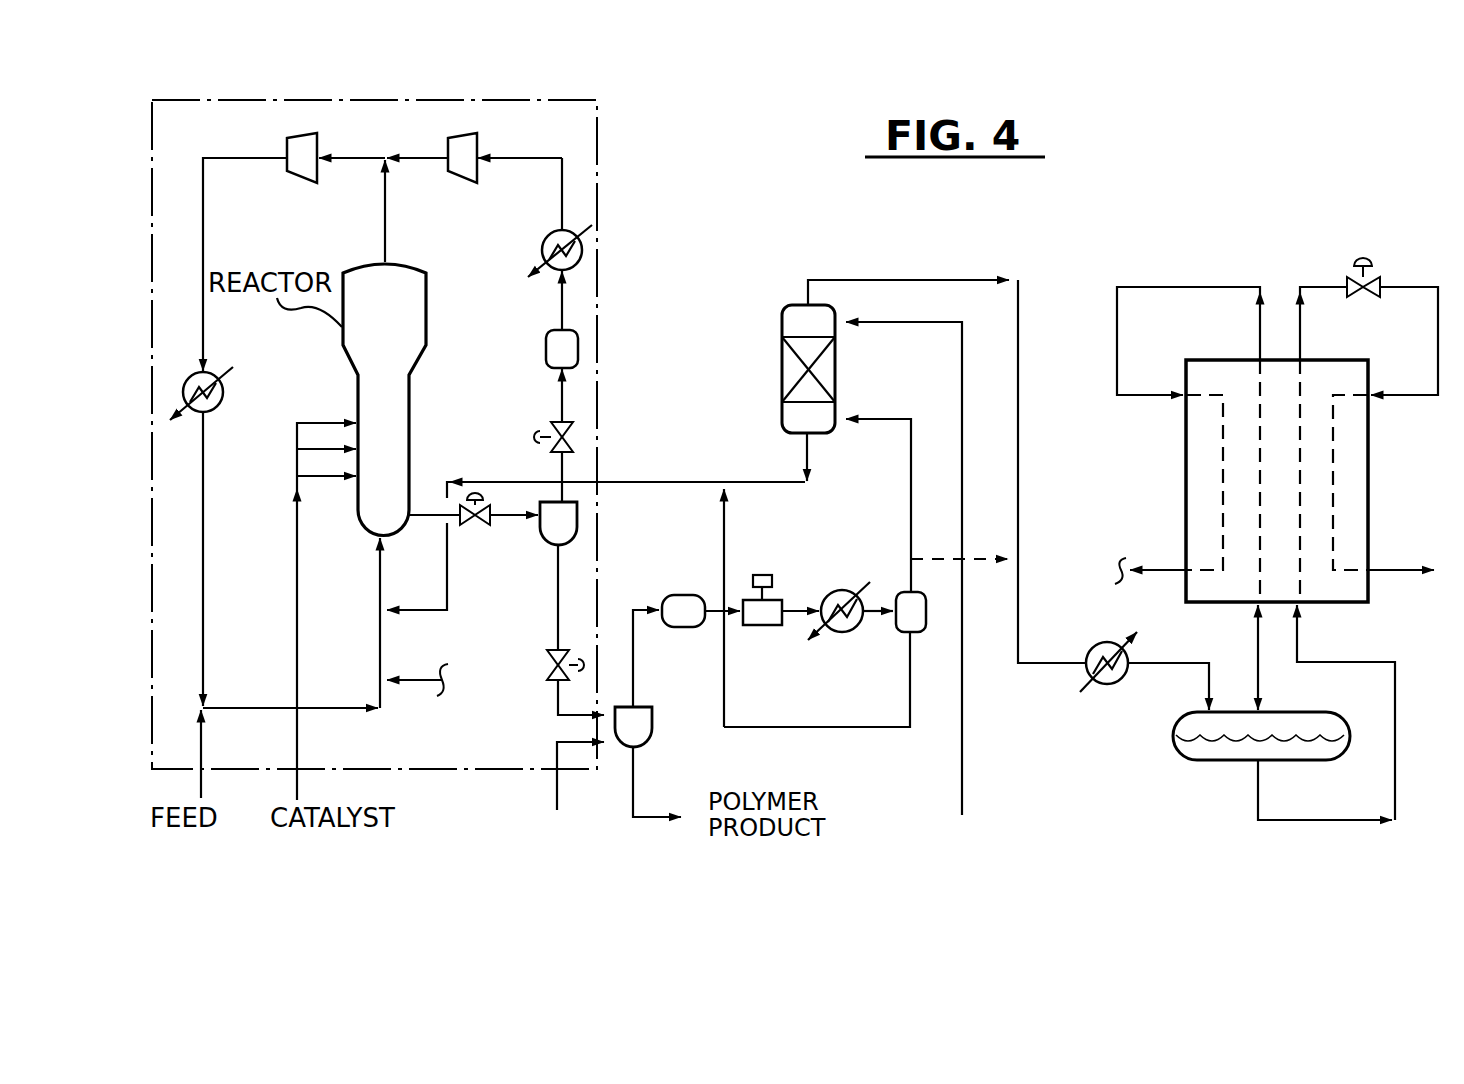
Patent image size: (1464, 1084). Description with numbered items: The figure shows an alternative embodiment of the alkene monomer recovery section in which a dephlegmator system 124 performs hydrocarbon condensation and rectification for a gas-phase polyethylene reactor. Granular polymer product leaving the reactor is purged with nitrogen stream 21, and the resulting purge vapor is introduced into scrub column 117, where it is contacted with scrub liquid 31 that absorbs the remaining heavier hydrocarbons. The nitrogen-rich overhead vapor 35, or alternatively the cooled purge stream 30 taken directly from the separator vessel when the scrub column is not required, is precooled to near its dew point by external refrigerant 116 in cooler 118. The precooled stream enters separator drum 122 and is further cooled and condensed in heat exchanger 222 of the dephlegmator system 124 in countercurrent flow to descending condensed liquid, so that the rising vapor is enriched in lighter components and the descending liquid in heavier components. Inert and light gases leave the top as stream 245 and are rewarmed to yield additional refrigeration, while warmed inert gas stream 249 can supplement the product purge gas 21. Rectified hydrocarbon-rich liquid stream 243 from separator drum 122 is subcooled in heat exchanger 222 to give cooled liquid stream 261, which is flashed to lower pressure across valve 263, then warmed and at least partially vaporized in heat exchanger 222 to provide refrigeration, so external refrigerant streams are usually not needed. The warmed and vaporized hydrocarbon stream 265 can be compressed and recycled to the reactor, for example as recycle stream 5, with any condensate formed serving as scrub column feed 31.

The recycle stream 5 is at (414, 679).
The nitrogen stream 21 is at (556, 793).
The cooled purge stream 30 is at (974, 558).
The scrub liquid 31 is at (962, 348).
The nitrogen-rich overhead vapor 35 is at (888, 280).
The external refrigerant 116 is at (1088, 672).
The scrub column 117 is at (782, 370).
The cooler 118 is at (1105, 684).
The separator drum 122 is at (1200, 762).
The dephlegmator system 124 is at (1272, 253).
The heat exchanger 222 is at (1369, 445).
The rectified hydrocarbon-rich liquid stream 243 is at (1304, 822).
The inert and light gas stream 245 is at (1136, 286).
The warmed inert gas stream 249 is at (1151, 568).
The cooled liquid stream 261 is at (1324, 286).
The valve 263 is at (1372, 259).
The warmed and vaporized hydrocarbon stream 265 is at (1397, 568).